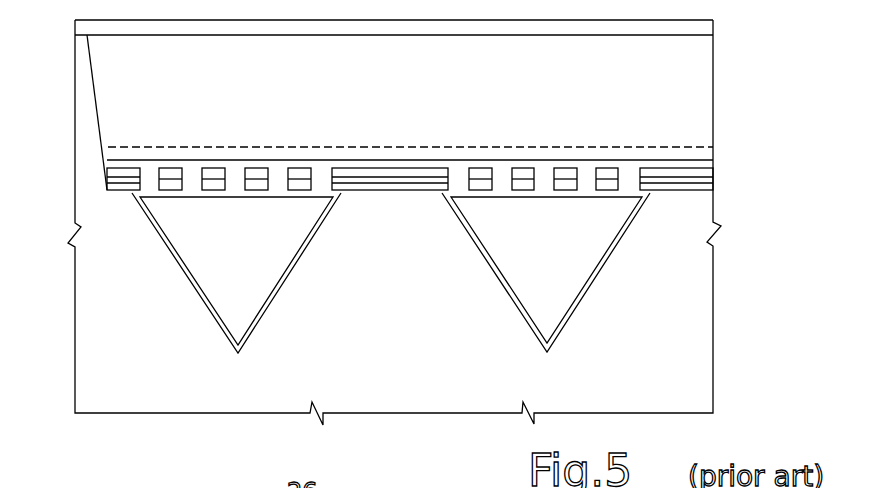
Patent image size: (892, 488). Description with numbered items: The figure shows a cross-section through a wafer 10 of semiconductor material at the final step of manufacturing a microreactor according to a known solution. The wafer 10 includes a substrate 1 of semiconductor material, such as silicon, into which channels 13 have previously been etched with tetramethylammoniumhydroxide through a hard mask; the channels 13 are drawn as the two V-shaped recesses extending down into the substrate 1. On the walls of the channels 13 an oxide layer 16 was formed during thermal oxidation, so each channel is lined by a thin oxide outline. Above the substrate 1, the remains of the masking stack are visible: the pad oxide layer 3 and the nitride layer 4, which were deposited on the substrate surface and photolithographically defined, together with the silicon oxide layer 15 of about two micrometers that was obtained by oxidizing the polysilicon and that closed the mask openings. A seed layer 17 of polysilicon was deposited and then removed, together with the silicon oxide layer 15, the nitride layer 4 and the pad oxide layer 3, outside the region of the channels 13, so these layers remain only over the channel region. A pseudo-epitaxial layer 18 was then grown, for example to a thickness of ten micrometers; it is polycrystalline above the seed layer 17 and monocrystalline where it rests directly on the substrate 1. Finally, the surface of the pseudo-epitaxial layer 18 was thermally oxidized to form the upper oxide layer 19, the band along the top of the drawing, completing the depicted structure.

The substrate 1 is at (124, 396).
The pad oxide layer 3 is at (125, 187).
The nitride layer 4 is at (122, 176).
The wafer 10 is at (735, 324).
The channels 13 is at (254, 292).
The silicon oxide layer 15 is at (321, 180).
The oxide layer 16 is at (300, 253).
The seed layer 17 is at (383, 152).
The pseudo-epitaxial layer 18 is at (582, 97).
The upper oxide layer 19 is at (693, 28).